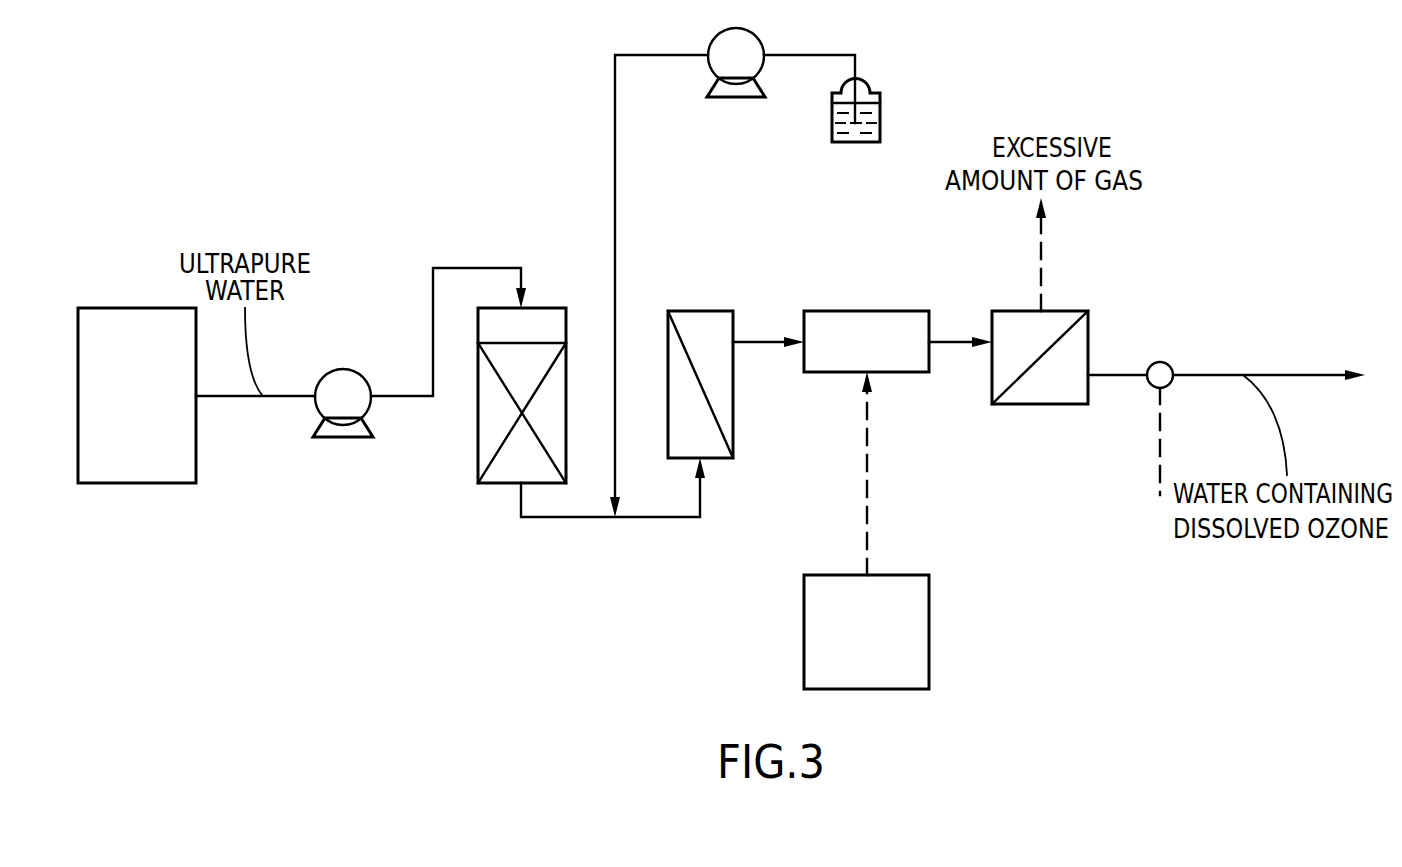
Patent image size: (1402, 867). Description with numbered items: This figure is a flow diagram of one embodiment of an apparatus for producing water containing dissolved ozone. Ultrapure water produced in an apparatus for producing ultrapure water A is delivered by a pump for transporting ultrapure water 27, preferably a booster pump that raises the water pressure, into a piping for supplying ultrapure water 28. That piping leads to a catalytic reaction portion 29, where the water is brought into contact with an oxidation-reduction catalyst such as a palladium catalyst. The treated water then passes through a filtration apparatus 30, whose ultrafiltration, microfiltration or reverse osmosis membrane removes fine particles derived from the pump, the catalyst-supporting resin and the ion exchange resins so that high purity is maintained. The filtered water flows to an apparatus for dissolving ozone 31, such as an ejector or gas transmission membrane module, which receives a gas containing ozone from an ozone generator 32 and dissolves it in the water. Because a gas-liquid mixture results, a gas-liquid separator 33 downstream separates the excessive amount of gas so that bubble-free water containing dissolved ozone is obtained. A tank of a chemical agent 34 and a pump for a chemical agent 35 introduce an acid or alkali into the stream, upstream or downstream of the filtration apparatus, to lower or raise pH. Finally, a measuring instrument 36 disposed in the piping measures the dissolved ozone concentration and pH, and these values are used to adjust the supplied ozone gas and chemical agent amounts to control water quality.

The apparatus for producing ultrapure water A is at (139, 484).
The pump for transporting ultrapure water 27 is at (355, 369).
The piping for supplying ultrapure water 28 is at (473, 267).
The catalytic reaction portion 29 is at (477, 455).
The filtration apparatus 30 is at (698, 310).
The apparatus for dissolving ozone 31 is at (866, 310).
The ozone generator 32 is at (929, 615).
The gas-liquid separator 33 is at (1038, 405).
The tank of a chemical agent 34 is at (866, 144).
The pump for a chemical agent 35 is at (735, 99).
The measuring instrument 36 is at (1165, 360).